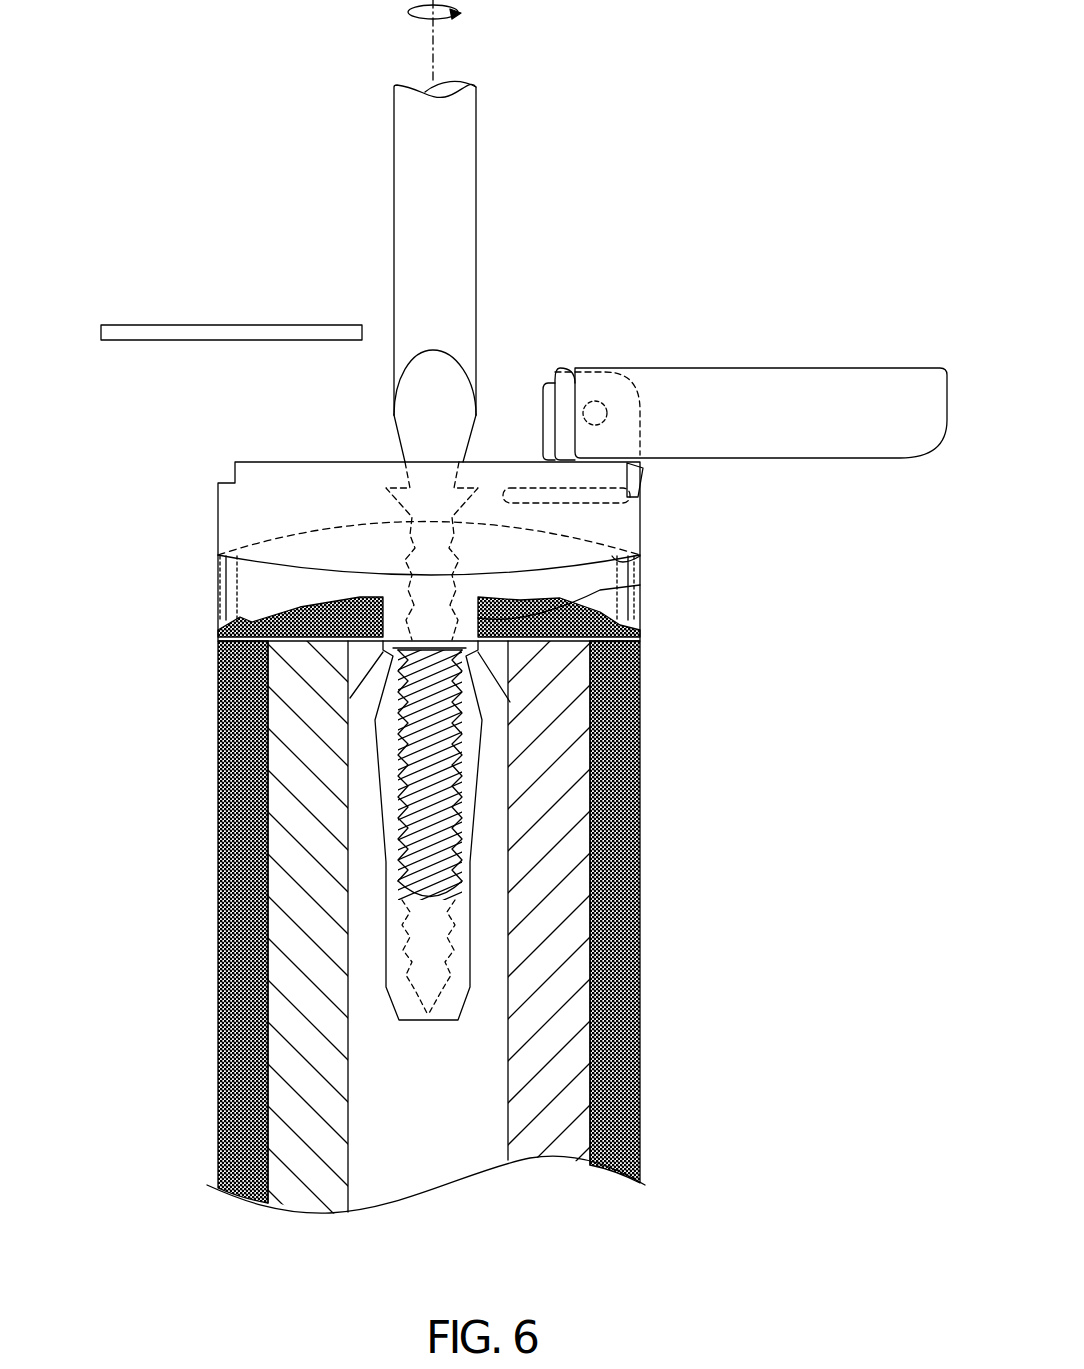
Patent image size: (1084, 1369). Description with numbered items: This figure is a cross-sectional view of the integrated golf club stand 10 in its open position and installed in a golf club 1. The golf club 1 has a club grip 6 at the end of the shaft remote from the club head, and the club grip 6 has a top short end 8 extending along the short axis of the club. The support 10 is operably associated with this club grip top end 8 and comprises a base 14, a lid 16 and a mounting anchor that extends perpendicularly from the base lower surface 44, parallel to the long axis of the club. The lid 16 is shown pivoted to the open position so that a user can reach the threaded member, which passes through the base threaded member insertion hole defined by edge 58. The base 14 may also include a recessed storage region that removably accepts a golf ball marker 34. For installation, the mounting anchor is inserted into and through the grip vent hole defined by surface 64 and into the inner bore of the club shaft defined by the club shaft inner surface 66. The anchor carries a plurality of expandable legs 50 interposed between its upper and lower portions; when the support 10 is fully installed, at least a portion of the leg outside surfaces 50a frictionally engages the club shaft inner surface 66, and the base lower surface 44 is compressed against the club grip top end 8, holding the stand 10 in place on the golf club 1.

The golf club 1 is at (195, 876).
The club grip 6 is at (218, 1005).
The club grip top end 8 is at (218, 612).
The integrated golf club stand 10 is at (205, 160).
The base 14 is at (218, 517).
The lid 16 is at (748, 368).
The golf ball marker 34 is at (101, 332).
The base lower surface 44 is at (620, 563).
The expandable legs 50 is at (383, 790).
The leg outside surfaces 50a is at (352, 700).
The edge defining base threaded member insertion hole 58 is at (430, 853).
The surface defining grip vent hole 64 is at (480, 618).
The club shaft inner surface 66 is at (348, 1126).